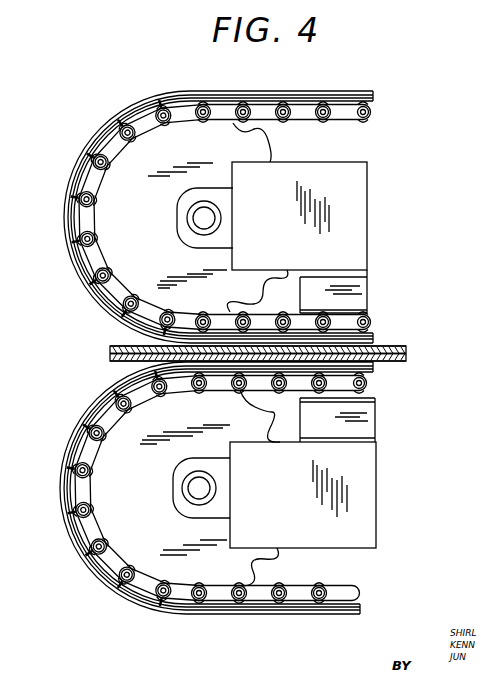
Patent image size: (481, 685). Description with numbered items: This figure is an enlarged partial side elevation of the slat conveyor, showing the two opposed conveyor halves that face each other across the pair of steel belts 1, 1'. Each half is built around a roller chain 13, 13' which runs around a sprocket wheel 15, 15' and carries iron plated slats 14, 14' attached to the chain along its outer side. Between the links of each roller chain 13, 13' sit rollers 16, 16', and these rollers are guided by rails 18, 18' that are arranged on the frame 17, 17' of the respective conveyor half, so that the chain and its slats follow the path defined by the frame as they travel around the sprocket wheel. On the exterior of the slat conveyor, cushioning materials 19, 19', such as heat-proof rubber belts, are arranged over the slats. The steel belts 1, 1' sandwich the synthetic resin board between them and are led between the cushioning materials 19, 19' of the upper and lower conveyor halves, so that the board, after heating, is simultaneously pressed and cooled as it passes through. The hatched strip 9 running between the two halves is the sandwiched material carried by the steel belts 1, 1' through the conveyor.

The steel belt 1 is at (286, 341).
The steel belt 1' is at (282, 376).
The belt strand 9 is at (110, 351).
The roller chain 13 is at (224, 217).
The roller chain 13' is at (220, 488).
The iron plated slat 14 is at (196, 217).
The iron plated slat 14' is at (200, 488).
The sprocket wheel 15 is at (214, 225).
The sprocket wheel 15' is at (214, 490).
The roller 16 is at (221, 217).
The roller 16' is at (230, 488).
The frame 17 is at (332, 216).
The frame 17' is at (338, 495).
The rail 18 is at (365, 291).
The rail 18' is at (371, 424).
The cushioning material 19 is at (246, 203).
The cushioning material 19' is at (220, 518).